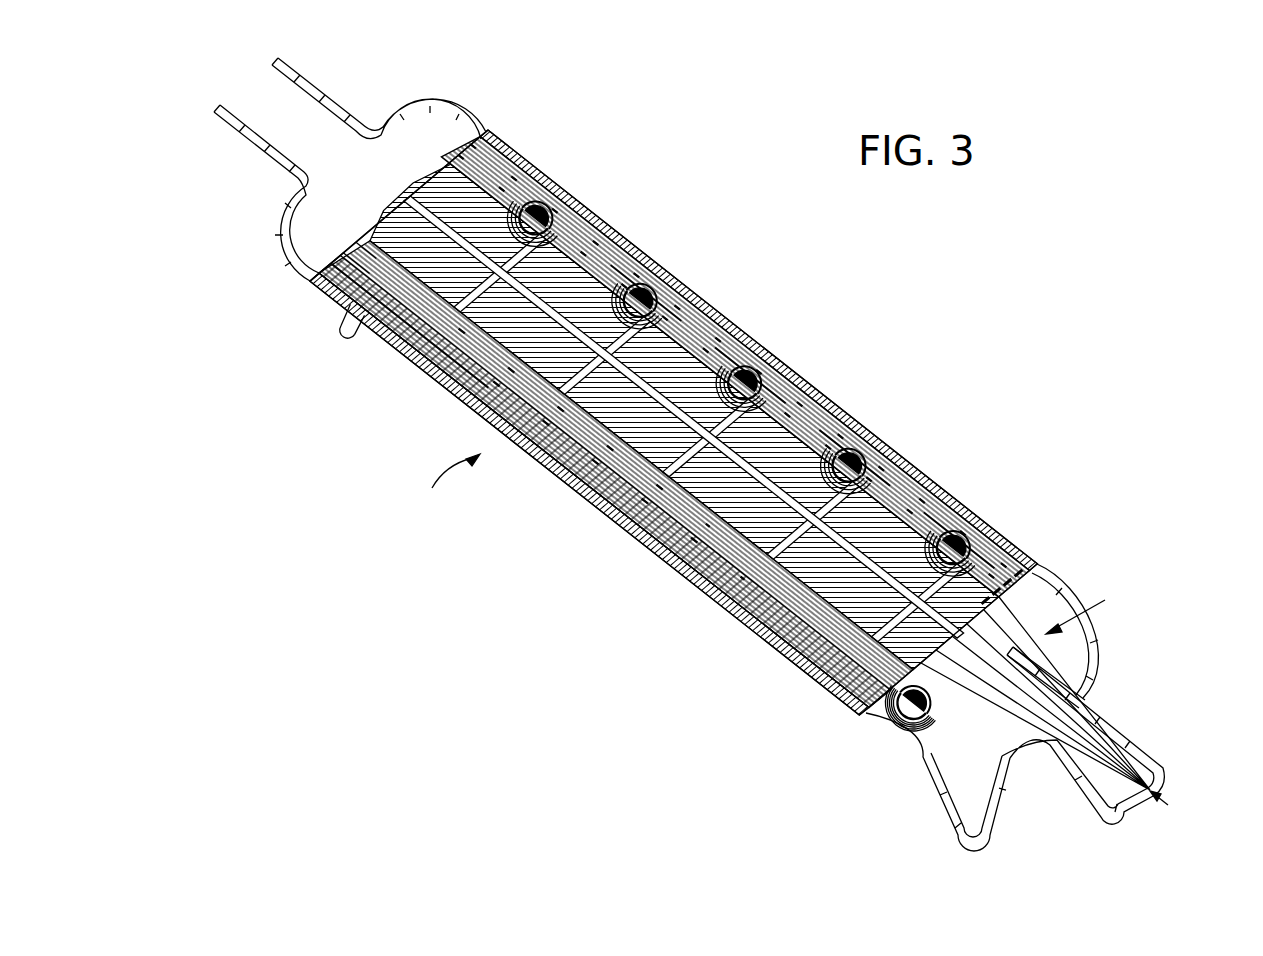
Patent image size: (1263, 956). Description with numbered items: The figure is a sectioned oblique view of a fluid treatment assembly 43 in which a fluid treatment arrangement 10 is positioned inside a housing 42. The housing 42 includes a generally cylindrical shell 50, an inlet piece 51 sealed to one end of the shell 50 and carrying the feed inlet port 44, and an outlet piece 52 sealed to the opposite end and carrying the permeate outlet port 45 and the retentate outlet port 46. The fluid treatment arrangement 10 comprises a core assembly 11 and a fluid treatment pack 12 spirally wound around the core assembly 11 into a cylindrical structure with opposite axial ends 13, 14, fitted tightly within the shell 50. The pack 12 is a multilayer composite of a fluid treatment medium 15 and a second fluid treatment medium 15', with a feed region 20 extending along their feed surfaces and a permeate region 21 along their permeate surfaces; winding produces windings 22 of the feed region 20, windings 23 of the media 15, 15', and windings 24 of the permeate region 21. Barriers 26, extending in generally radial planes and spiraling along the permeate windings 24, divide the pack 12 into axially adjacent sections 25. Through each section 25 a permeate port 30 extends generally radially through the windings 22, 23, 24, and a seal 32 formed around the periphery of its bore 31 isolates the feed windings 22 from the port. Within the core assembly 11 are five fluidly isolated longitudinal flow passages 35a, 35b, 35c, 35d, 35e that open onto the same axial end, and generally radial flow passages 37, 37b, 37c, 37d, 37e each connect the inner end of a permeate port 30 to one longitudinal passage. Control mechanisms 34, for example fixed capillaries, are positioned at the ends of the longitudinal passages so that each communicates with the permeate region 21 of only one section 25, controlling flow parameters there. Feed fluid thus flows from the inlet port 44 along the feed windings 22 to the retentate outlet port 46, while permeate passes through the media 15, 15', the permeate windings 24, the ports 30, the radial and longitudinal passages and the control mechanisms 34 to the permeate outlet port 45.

The fluid treatment arrangement 10 is at (718, 422).
The core assembly 11 is at (1087, 650).
The fluid treatment pack 12 is at (722, 570).
The axial end 13 is at (463, 150).
The axial end 14 is at (1040, 606).
The fluid treatment medium 15 is at (306, 333).
The second fluid treatment medium 15' is at (339, 335).
The feed region 20 is at (343, 272).
The permeate region 21 is at (362, 315).
The windings of the feed region 22 is at (906, 724).
The windings of the fluid treatment medium 23 is at (918, 738).
The windings of the permeate region 24 is at (933, 760).
The axially adjacent sections 25 is at (475, 393).
The barriers 26 is at (682, 506).
The permeate ports 30 is at (636, 288).
The bore 31 is at (652, 208).
The seal 32 is at (945, 532).
The control mechanisms 34 is at (1059, 711).
The longitudinal flow passage 35a is at (550, 236).
The longitudinal flow passage 35b is at (662, 310).
The longitudinal flow passage 35c is at (777, 382).
The longitudinal flow passage 35d is at (885, 475).
The longitudinal flow passage 35e is at (985, 562).
The radial flow passage 37 is at (503, 173).
The radial flow passage 37b is at (566, 250).
The radial flow passage 37c is at (690, 365).
The radial flow passage 37d is at (805, 440).
The radial flow passage 37e is at (920, 510).
The housing 42 is at (298, 184).
The fluid treatment assembly 43 is at (443, 487).
The feed inlet port 44 is at (323, 93).
The permeate outlet port 45 is at (1127, 733).
The retentate outlet port 46 is at (945, 815).
The shell 50 is at (750, 616).
The inlet piece 51 is at (270, 228).
The outlet piece 52 is at (1013, 755).